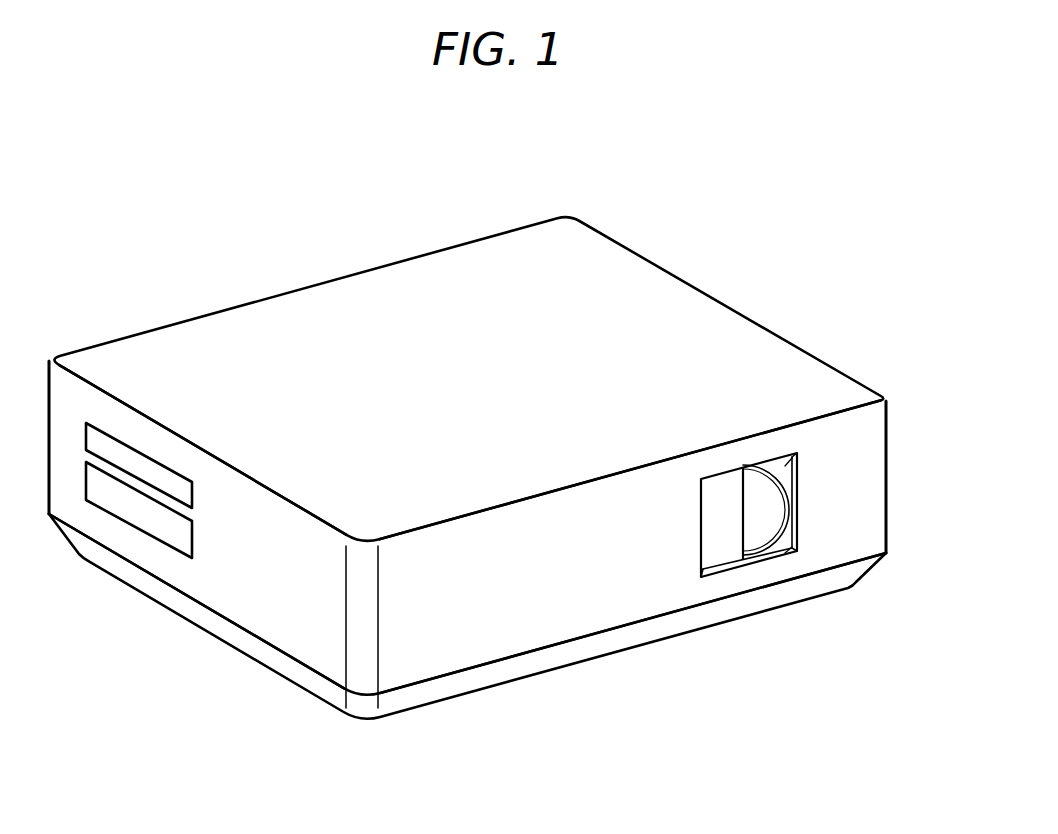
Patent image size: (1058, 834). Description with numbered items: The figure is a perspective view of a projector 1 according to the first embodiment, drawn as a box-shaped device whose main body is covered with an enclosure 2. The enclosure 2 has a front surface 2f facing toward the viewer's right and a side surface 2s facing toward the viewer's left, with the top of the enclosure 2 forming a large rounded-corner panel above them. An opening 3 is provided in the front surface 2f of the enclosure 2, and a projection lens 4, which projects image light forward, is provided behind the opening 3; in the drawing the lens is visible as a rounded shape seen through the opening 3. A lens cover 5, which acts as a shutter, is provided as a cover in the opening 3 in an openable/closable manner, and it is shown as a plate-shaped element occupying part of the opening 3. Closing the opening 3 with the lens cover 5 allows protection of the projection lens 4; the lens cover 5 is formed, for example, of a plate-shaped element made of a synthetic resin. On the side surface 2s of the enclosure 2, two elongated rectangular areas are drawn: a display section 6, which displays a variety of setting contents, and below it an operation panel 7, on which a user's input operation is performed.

The projector 1 is at (502, 434).
The enclosure 2 is at (685, 305).
The front surface 2f is at (666, 547).
The side surface 2s is at (198, 549).
The opening 3 is at (788, 512).
The projection lens 4 is at (770, 490).
The lens cover 5 is at (710, 528).
The display section 6 is at (187, 493).
The operation panel 7 is at (187, 542).